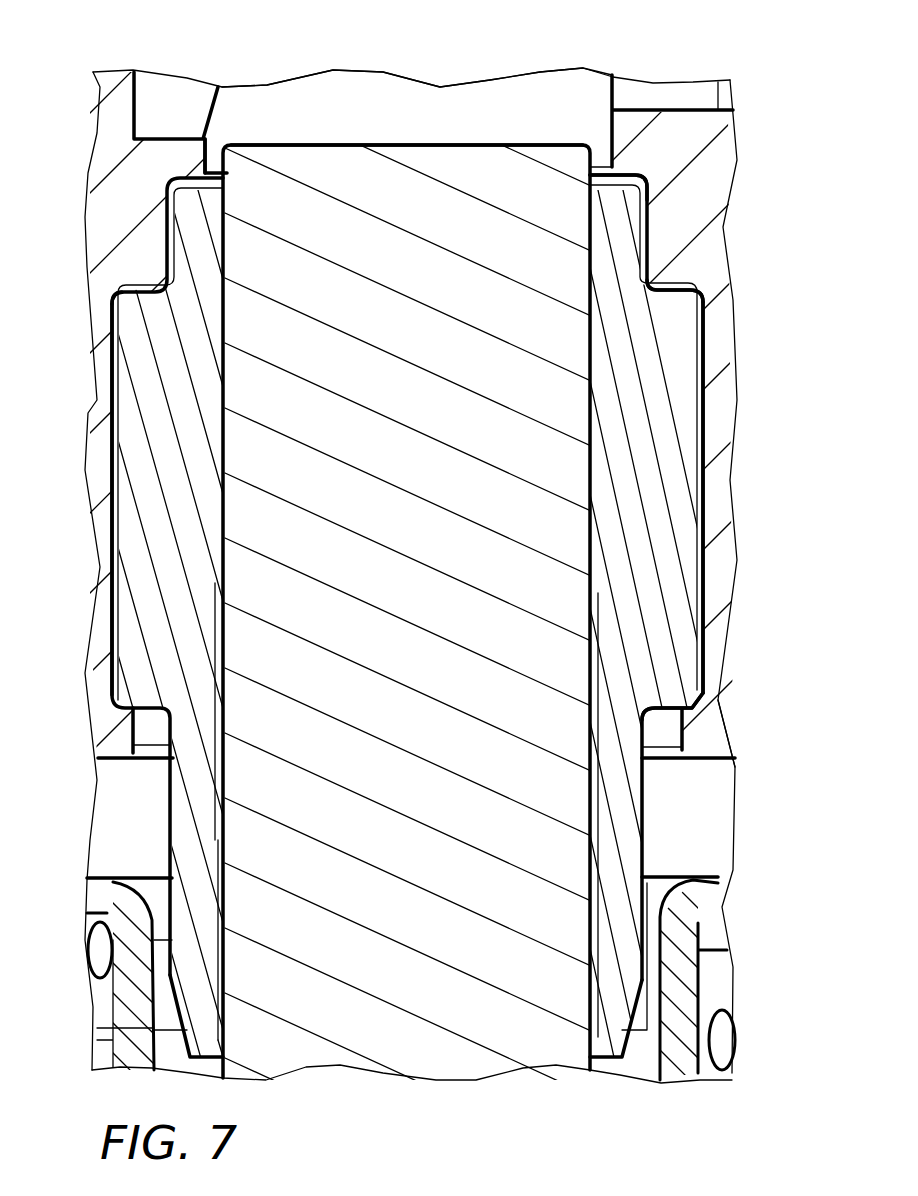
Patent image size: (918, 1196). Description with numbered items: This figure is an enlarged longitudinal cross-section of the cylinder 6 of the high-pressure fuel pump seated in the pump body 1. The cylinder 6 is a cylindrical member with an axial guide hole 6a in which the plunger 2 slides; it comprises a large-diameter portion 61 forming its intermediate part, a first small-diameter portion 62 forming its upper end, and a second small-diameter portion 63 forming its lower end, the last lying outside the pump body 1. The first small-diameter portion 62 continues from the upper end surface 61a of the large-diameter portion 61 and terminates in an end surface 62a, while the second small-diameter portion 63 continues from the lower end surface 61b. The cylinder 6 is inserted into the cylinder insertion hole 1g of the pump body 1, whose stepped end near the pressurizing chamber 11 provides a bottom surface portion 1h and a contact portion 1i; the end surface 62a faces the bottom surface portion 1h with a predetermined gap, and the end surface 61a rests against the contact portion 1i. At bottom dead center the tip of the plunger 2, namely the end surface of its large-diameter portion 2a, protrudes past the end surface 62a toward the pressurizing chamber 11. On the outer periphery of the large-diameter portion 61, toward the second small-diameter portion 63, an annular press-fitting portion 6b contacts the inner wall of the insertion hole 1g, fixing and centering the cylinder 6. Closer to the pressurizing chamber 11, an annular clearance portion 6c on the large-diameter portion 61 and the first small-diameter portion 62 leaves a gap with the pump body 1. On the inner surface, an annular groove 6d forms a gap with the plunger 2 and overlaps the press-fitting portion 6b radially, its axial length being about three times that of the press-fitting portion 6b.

The pump body 1 is at (712, 168).
The cylinder insertion hole 1g is at (688, 468).
The bottom surface portion 1h is at (187, 187).
The contact portion 1i is at (147, 308).
The pressurizing chamber 11 is at (438, 117).
The plunger 2 is at (516, 1100).
The large-diameter portion 2a is at (277, 190).
The cylinder 6 is at (459, 606).
The guide hole 6a is at (578, 300).
The press-fitting portion 6b is at (310, 691).
The clearance portion 6c is at (64, 188).
The groove 6d is at (222, 717).
The large-diameter portion 61 is at (677, 437).
The end surface 61a is at (677, 275).
The end surface 61b is at (670, 712).
The first small-diameter portion 62 is at (650, 237).
The end surface 62a is at (622, 170).
The second small-diameter portion 63 is at (634, 855).